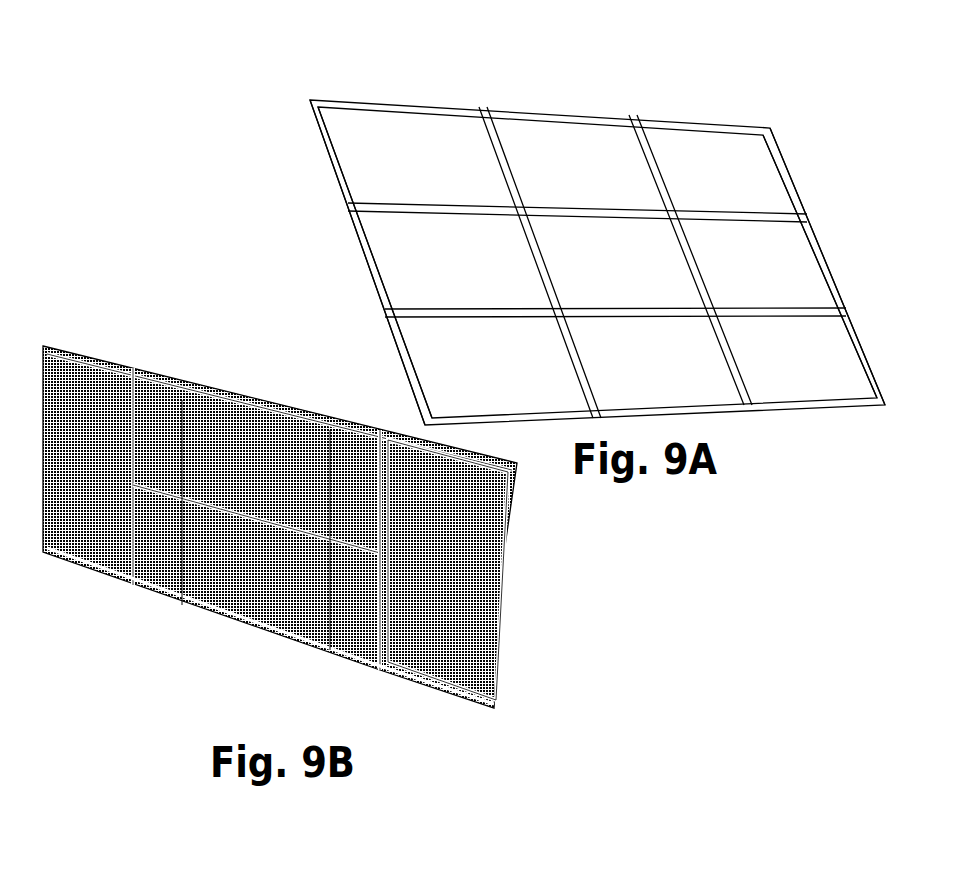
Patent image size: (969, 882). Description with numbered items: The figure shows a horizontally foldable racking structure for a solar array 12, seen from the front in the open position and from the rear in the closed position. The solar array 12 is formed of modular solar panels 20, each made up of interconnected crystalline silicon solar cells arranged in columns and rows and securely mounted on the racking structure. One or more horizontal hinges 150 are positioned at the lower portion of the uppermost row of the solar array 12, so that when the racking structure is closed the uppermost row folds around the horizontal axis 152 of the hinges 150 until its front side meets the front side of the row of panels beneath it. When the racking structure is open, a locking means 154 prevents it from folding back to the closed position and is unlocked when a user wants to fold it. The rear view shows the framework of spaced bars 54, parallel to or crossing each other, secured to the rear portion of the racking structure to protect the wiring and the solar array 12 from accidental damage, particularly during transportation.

In FIG. 9A, the solar array 12 is at (392, 52).
In FIG. 9B, the solar array 12 is at (280, 510).
In FIG. 9A, the solar panel 20 is at (395, 262).
In FIG. 9A, the horizontal hinge 150 is at (473, 203).
In FIG. 9B, the horizontal hinge 150 is at (134, 368).
In FIG. 9A, the horizontal axis 152 is at (830, 218).
In FIG. 9A, the locking means 154 is at (345, 197).
In FIG. 9B, the framework of spaced bars 54 is at (183, 600).